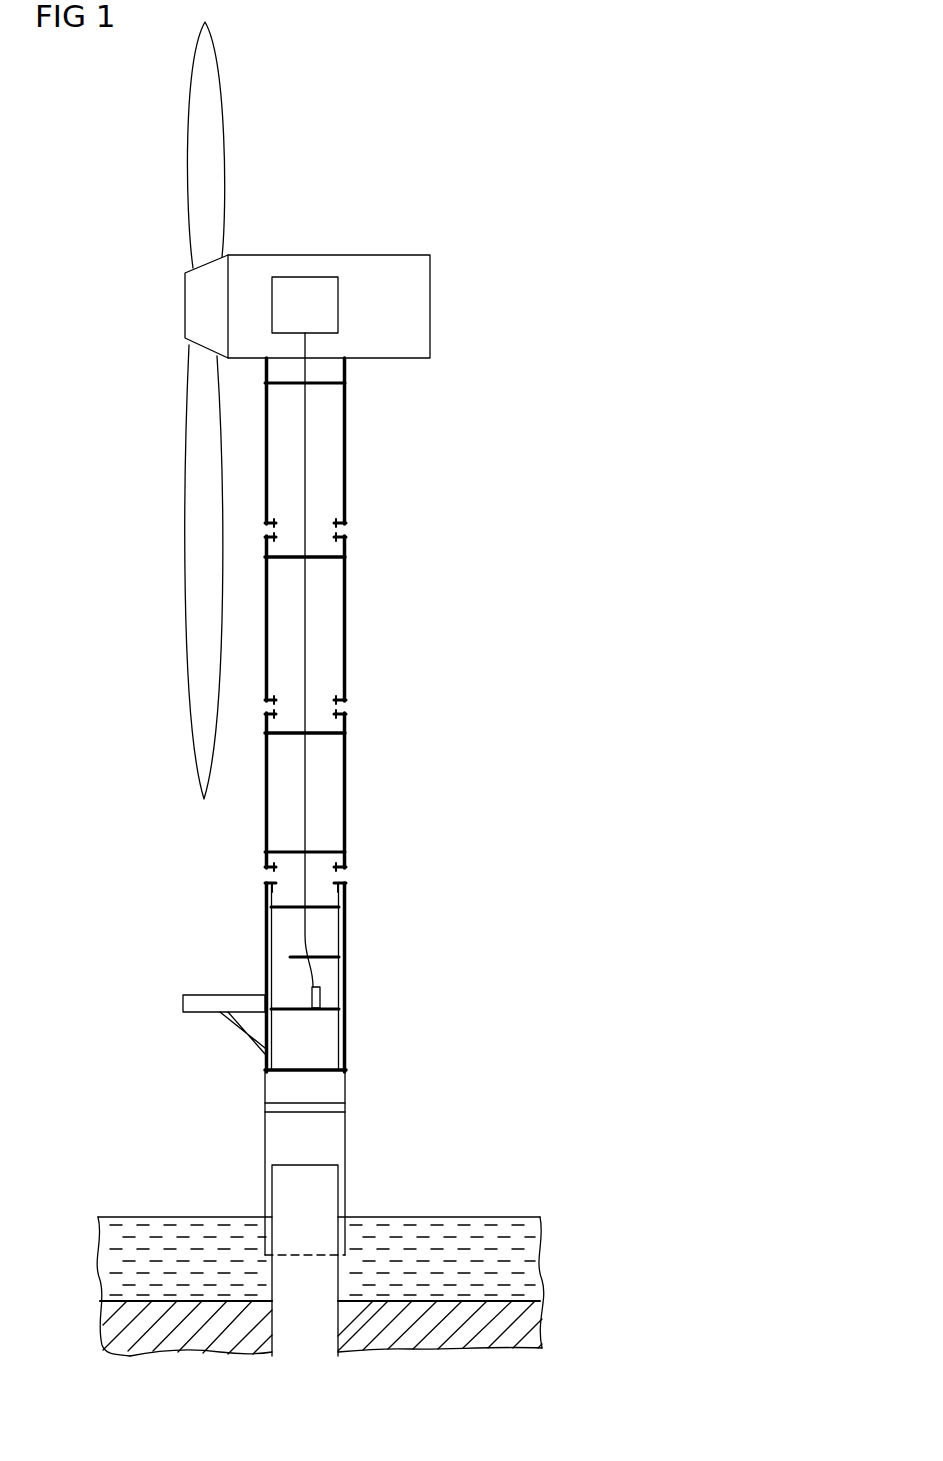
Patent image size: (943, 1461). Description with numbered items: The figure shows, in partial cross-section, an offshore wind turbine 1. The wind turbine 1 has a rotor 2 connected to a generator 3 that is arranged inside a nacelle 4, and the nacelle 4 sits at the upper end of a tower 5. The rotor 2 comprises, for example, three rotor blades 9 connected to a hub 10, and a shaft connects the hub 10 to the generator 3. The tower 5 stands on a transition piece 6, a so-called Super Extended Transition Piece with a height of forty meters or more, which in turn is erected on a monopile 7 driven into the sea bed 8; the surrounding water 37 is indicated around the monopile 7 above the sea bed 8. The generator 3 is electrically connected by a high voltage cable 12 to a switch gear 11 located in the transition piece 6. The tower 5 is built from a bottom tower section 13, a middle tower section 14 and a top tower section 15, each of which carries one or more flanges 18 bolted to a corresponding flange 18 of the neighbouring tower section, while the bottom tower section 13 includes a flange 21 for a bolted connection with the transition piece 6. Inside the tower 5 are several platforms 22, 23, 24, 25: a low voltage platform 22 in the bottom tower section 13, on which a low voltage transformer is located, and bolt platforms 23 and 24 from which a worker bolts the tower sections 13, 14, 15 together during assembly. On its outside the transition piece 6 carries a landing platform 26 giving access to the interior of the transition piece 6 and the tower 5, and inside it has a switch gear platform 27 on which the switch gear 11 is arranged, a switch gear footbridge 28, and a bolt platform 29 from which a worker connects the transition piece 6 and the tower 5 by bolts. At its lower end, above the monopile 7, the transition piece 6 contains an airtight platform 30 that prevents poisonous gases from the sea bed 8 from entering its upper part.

The wind turbine 1 is at (470, 129).
The rotor 2 is at (132, 245).
The generator 3 is at (310, 288).
The nacelle 4 is at (398, 254).
The tower 5 is at (495, 455).
The transition piece 6 is at (345, 1043).
The monopile 7 is at (338, 1187).
The sea bed 8 is at (520, 1332).
The rotor blades 9 is at (200, 543).
The hub 10 is at (193, 310).
The switch gear 11 is at (320, 1000).
The high voltage cable 12 is at (305, 447).
The bottom tower section 13 is at (345, 790).
The middle tower section 14 is at (345, 632).
The top tower section 15 is at (345, 473).
The flanges 18 is at (343, 516).
The flange 21 is at (265, 866).
The low voltage platform 22 is at (345, 832).
The bolt platform 23 is at (330, 750).
The bolt platform 24 is at (330, 565).
The platform 25 is at (327, 385).
The landing platform 26 is at (222, 995).
The switch gear platform 27 is at (332, 1015).
The switch gear footbridge 28 is at (340, 950).
The bolt platform 29 is at (340, 898).
The airtight platform 30 is at (345, 1110).
The water 37 is at (535, 1270).